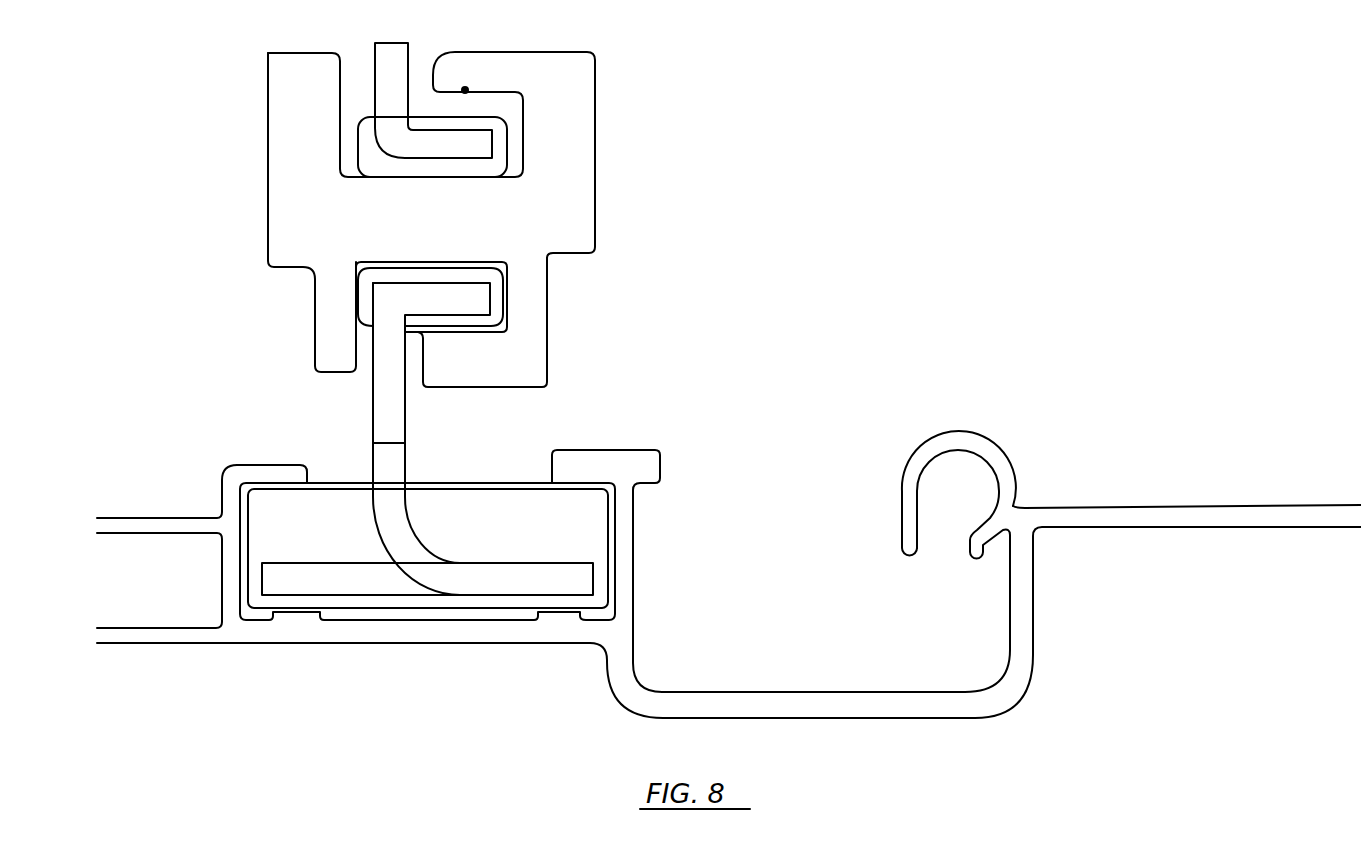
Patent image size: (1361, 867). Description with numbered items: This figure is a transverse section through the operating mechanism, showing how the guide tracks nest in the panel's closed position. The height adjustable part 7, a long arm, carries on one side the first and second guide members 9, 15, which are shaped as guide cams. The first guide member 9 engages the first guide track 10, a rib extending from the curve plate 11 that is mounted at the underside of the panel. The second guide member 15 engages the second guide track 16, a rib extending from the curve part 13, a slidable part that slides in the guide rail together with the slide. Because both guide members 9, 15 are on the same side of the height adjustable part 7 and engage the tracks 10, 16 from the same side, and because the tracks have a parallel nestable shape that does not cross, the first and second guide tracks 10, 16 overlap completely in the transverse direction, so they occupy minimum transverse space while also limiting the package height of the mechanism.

The height adjustable part 7 is at (528, 212).
The first guide member 9 is at (583, 100).
The first guide track 10 is at (576, 147).
The curve plate 11 is at (615, 65).
The curve part 13 is at (585, 439).
The second guide member 15 is at (602, 322).
The second guide track 16 is at (580, 295).